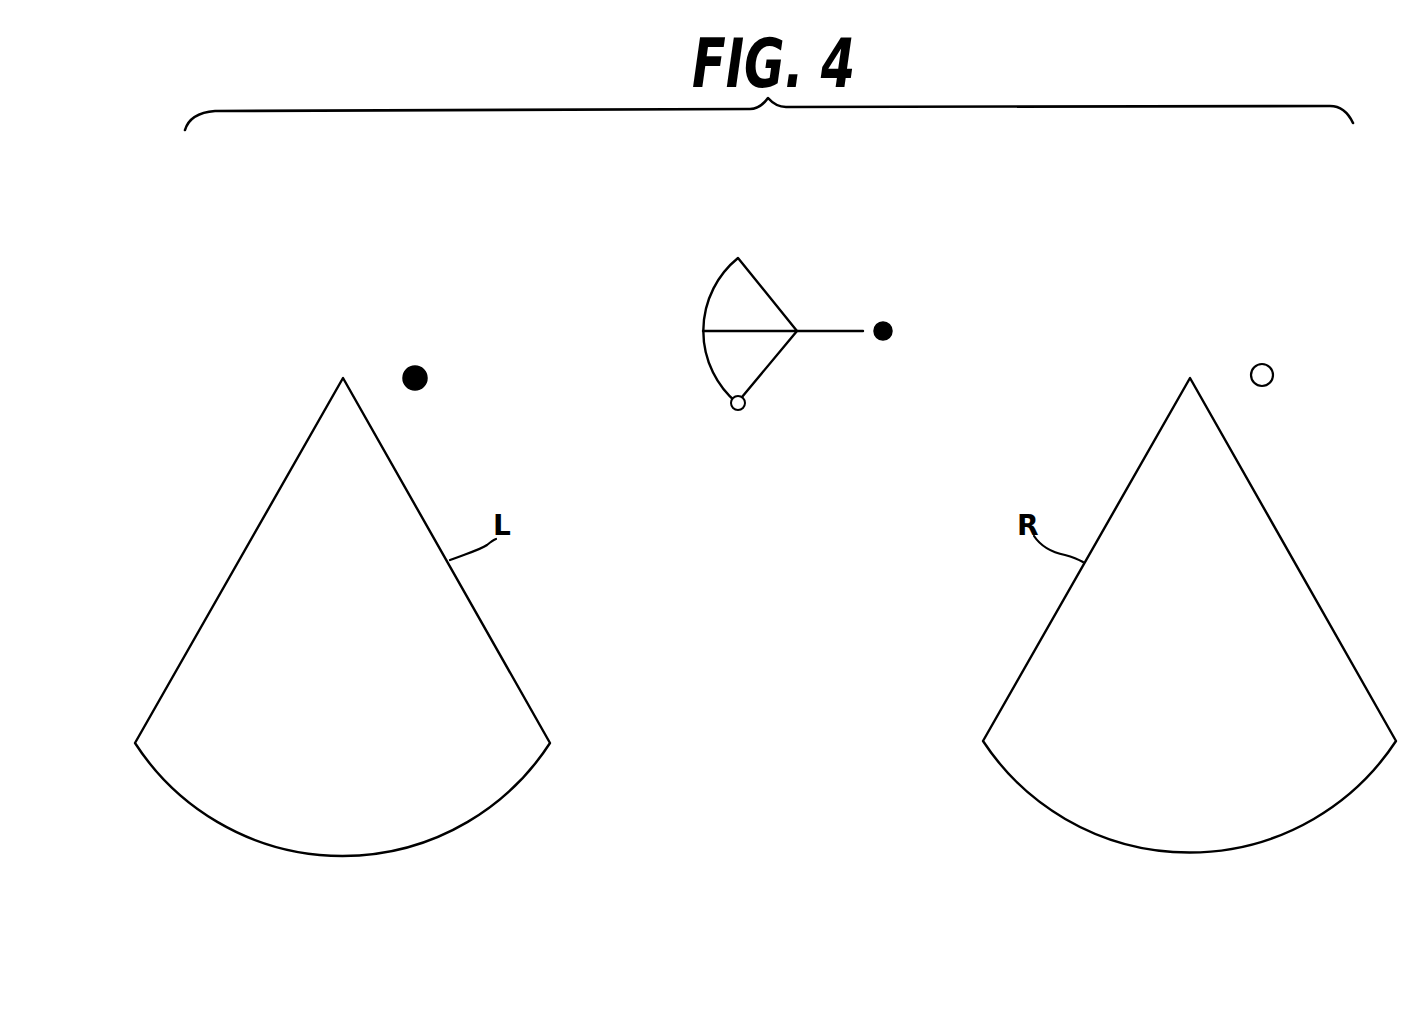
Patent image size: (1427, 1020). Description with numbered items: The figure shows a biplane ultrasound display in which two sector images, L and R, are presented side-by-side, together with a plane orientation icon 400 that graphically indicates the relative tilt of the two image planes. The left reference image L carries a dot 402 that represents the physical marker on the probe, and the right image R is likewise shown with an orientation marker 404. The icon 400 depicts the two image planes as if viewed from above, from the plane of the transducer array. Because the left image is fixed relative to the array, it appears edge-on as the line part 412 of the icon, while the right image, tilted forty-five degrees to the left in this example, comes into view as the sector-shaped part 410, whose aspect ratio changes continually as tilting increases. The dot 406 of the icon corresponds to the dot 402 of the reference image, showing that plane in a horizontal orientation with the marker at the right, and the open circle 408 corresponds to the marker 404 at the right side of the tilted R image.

The icon 400 is at (903, 221).
The dot 402 is at (427, 377).
The orientation marker 404 is at (1273, 374).
The dot 406 is at (893, 329).
The open circle 408 is at (740, 411).
The sector-shaped part 410 is at (768, 282).
The line part 412 is at (829, 333).